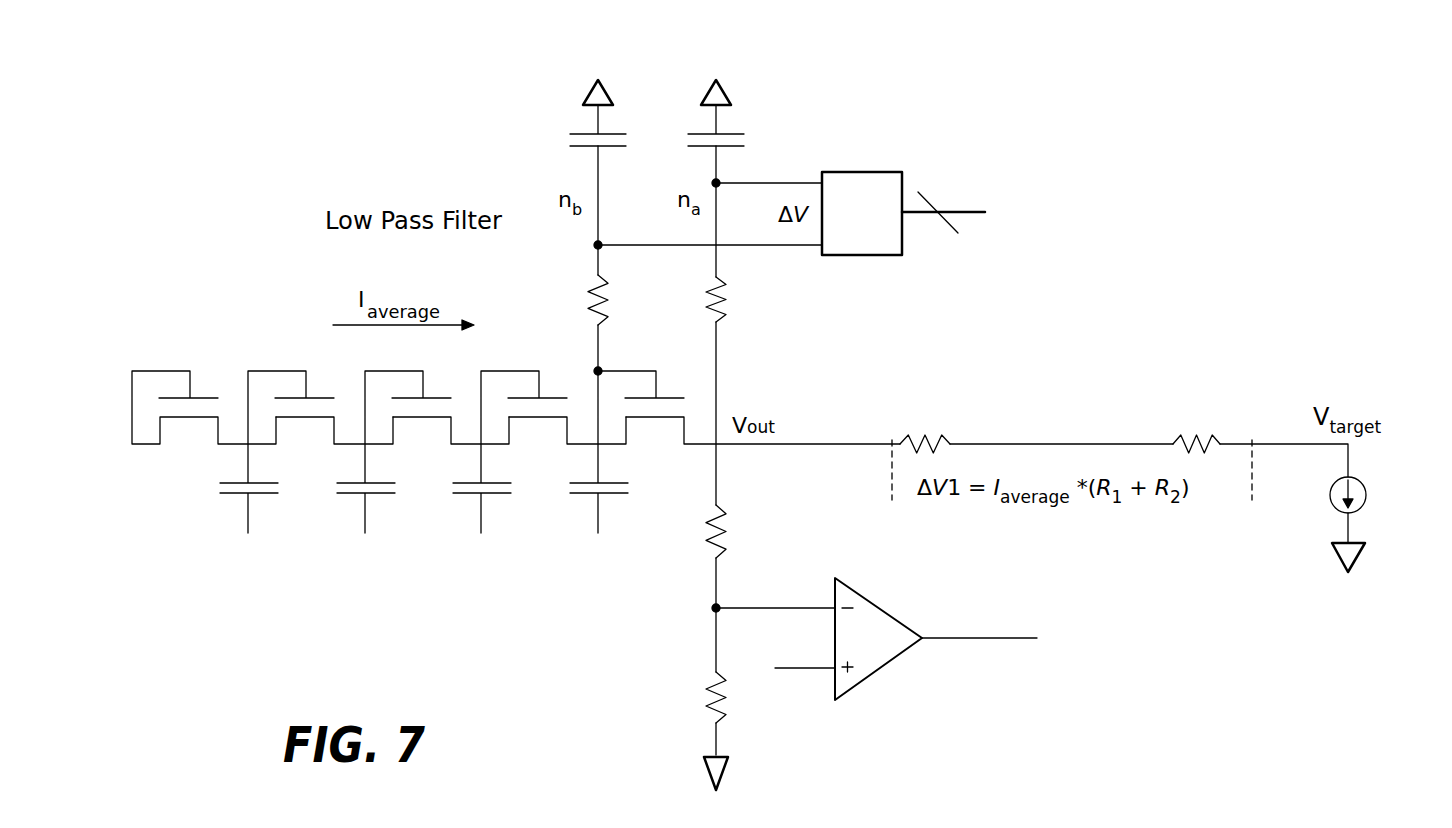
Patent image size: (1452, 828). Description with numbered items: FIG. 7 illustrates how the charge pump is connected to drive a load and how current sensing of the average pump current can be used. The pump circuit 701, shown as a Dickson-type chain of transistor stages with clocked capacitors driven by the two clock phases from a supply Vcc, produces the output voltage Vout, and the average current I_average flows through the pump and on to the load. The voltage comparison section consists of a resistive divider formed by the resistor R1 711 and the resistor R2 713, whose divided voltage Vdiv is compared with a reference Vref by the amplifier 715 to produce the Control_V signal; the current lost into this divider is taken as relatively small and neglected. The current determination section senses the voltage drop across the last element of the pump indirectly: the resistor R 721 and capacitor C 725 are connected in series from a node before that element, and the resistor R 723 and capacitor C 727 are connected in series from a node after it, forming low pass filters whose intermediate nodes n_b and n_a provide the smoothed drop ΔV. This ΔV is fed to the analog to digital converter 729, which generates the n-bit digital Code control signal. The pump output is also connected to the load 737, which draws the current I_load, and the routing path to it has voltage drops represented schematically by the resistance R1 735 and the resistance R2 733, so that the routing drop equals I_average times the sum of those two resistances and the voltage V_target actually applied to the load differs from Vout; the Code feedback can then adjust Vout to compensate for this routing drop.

The pump circuit 701 is at (163, 343).
The resistive divider resistor R1 711 is at (728, 531).
The resistive divider resistor R2 713 is at (731, 695).
The amplifier 715 is at (853, 586).
The low pass filter resistor R 721 is at (588, 288).
The low pass filter resistor R 723 is at (728, 297).
The low pass filter capacitor C 725 is at (579, 133).
The low pass filter capacitor C 727 is at (733, 133).
The analog to digital converter 729 is at (865, 172).
The resistance R2 733 is at (1219, 430).
The resistance R1 735 is at (946, 432).
The load 737 is at (1358, 478).